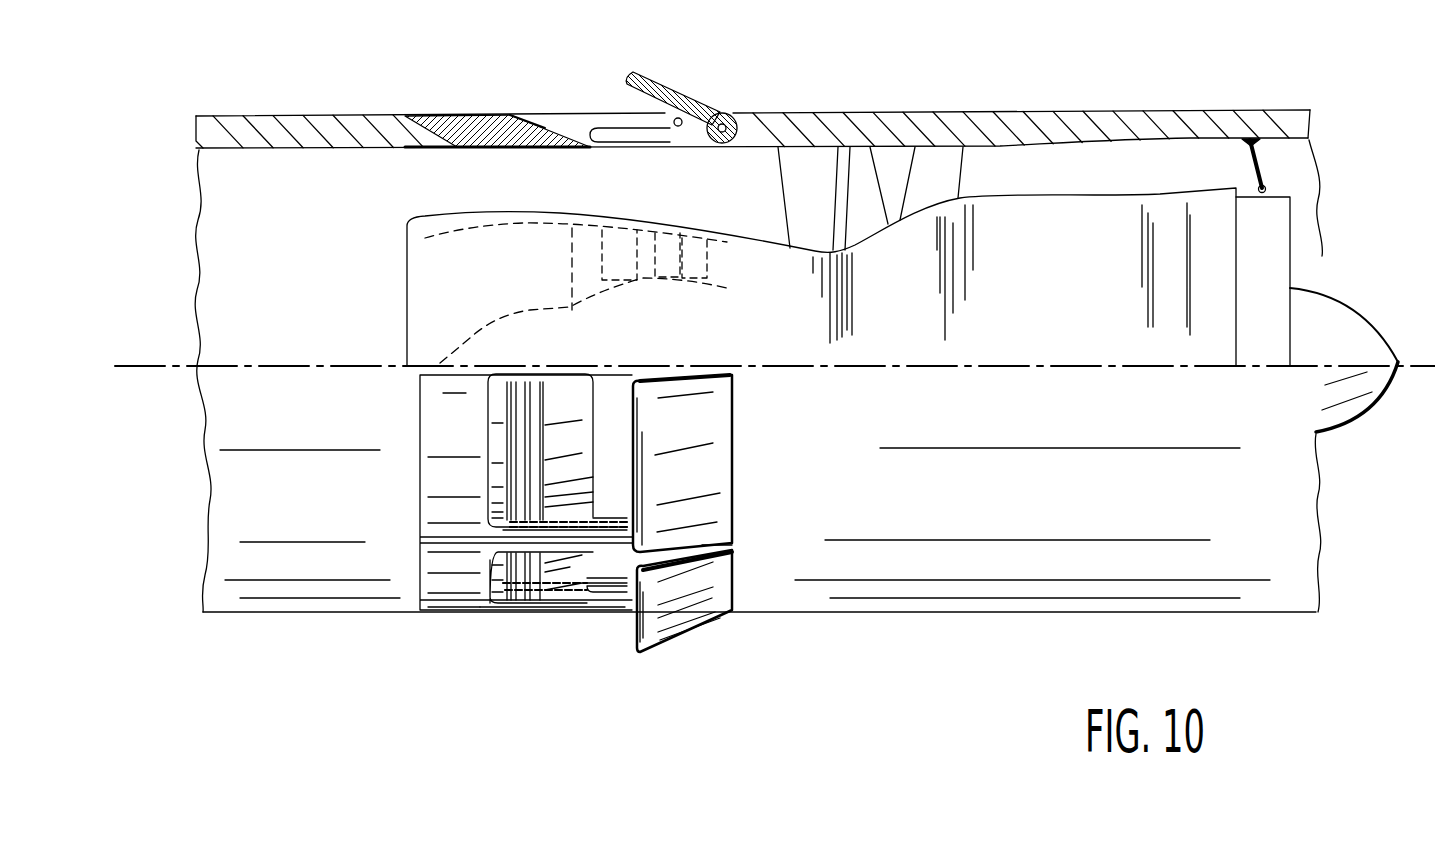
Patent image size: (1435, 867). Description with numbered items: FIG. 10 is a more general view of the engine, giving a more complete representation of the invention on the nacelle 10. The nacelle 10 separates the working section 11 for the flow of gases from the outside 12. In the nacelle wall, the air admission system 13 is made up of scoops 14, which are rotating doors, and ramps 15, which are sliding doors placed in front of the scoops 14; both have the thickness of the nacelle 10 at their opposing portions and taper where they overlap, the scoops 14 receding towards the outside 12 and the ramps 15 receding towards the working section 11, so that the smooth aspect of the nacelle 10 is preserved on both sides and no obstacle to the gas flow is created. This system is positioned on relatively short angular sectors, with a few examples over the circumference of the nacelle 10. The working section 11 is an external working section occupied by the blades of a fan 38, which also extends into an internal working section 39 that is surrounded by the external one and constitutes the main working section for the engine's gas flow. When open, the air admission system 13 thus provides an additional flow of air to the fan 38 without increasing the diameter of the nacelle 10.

The nacelle 10 is at (222, 138).
The working section 11 is at (518, 187).
The outside 12 is at (1142, 57).
The air admission system 13 is at (865, 93).
The scoops 14 is at (700, 113).
The ramps 15 is at (465, 124).
The fan 38 is at (776, 190).
The internal working section 39 is at (500, 289).